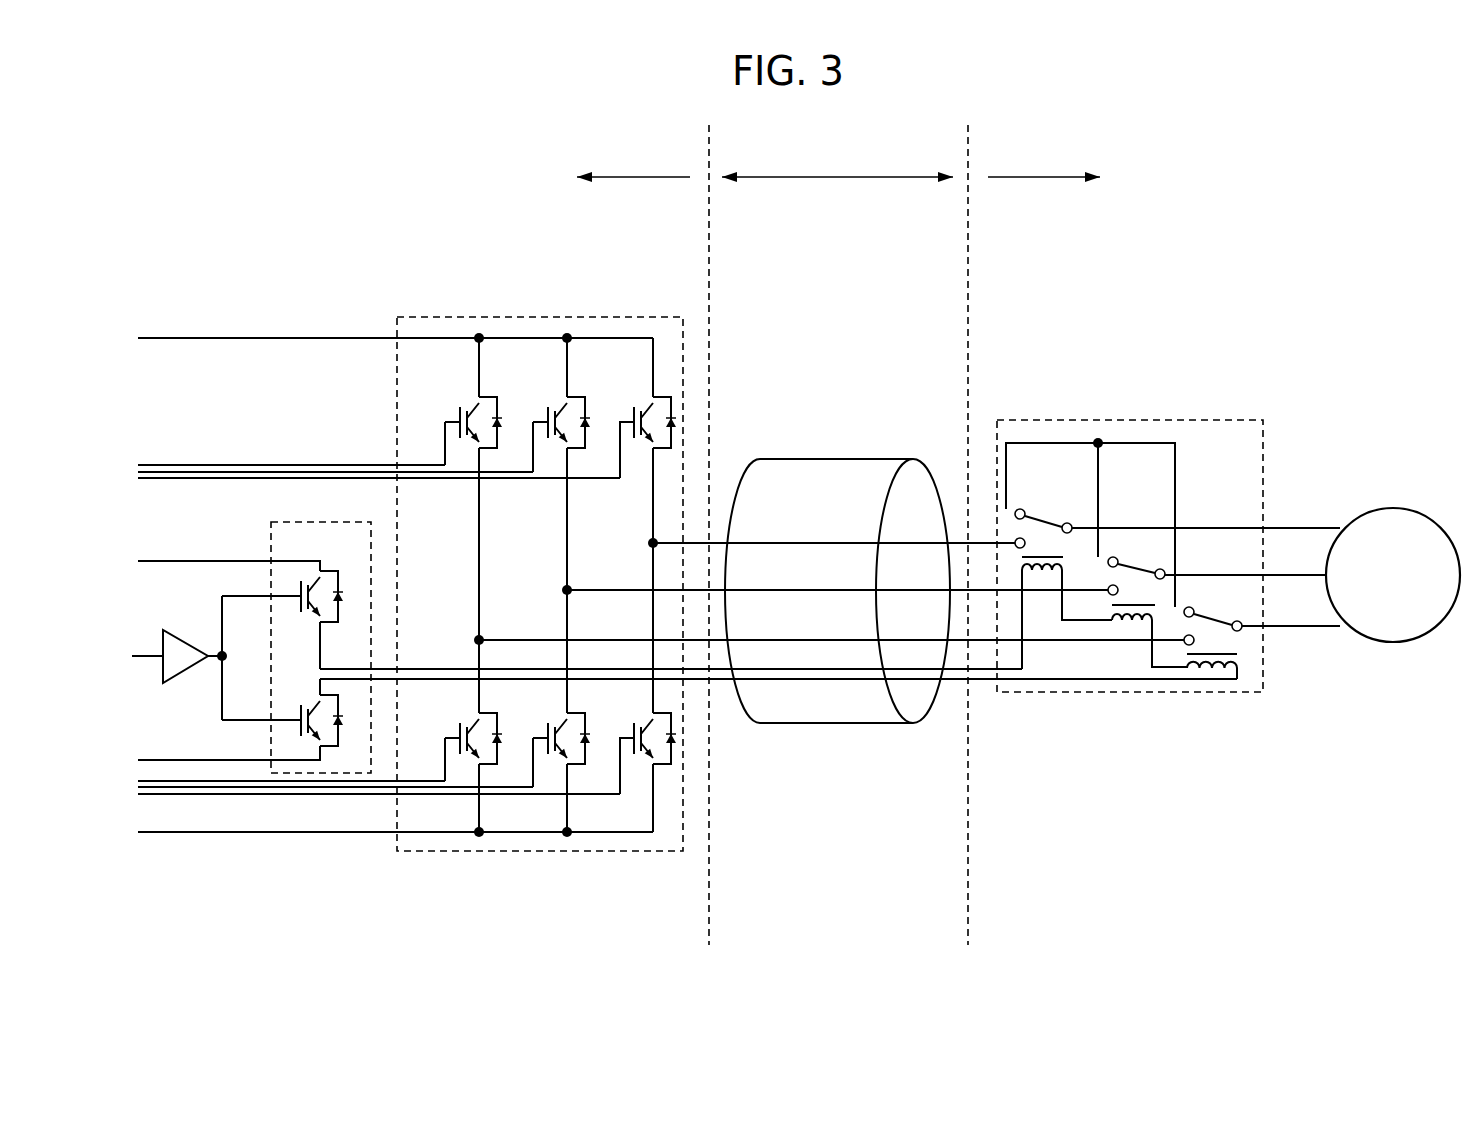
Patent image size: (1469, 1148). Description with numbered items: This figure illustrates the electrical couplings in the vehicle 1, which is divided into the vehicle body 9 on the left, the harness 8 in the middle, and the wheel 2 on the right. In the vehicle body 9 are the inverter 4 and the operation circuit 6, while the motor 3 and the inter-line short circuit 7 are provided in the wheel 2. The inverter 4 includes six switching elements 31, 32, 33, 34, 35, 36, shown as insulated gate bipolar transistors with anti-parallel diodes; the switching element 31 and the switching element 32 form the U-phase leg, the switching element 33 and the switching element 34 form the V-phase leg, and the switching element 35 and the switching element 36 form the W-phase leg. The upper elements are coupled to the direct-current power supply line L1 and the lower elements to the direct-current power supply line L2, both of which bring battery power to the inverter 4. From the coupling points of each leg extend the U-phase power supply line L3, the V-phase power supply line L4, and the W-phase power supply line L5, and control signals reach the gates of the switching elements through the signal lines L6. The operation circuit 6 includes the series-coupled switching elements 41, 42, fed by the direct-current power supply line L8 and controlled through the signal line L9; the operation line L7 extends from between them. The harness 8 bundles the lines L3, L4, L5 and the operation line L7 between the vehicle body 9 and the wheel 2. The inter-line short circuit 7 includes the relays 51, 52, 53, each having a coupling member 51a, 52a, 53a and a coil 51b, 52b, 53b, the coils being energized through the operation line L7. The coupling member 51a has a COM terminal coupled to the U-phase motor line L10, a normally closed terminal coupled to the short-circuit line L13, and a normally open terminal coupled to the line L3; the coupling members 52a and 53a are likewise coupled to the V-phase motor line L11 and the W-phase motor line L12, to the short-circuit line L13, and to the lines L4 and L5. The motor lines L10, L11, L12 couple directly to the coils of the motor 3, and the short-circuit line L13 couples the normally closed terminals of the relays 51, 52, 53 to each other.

The vehicle 1 is at (340, 138).
The wheel 2 is at (1044, 160).
The motor 3 is at (1448, 535).
The inverter 4 is at (578, 317).
The operation circuit 6 is at (271, 528).
The inter-line short circuit 7 is at (1180, 420).
The harness 8 is at (862, 459).
The vehicle body 9 is at (595, 160).
The switching element 31 is at (645, 408).
The switching element 32 is at (646, 723).
The switching element 33 is at (559, 408).
The switching element 34 is at (560, 723).
The switching element 35 is at (471, 408).
The switching element 36 is at (472, 723).
The switching element 41 is at (312, 575).
The switching element 42 is at (312, 699).
The relay 51 is at (1053, 505).
The coupling member 51a is at (1021, 509).
The coil 51b is at (1040, 573).
The relay 52 is at (1132, 551).
The coupling member 52a is at (1117, 557).
The coil 52b is at (1135, 623).
The relay 53 is at (1210, 603).
The coupling member 53a is at (1243, 631).
The coil 53b is at (1212, 669).
The direct-current power supply line L1 is at (270, 338).
The direct-current power supply line L2 is at (188, 833).
The U-phase power supply line L3 is at (778, 543).
The V-phase power supply line L4 is at (607, 588).
The W-phase power supply line L5 is at (518, 638).
The signal lines L6 is at (276, 478).
The operation line L7 is at (835, 723).
The direct-current power supply line L8 is at (188, 561).
The signal line L9 is at (140, 656).
The U-phase motor line L10 is at (1278, 528).
The V-phase motor line L11 is at (1303, 576).
The W-phase motor line L12 is at (1328, 628).
The short-circuit line L13 is at (1177, 480).